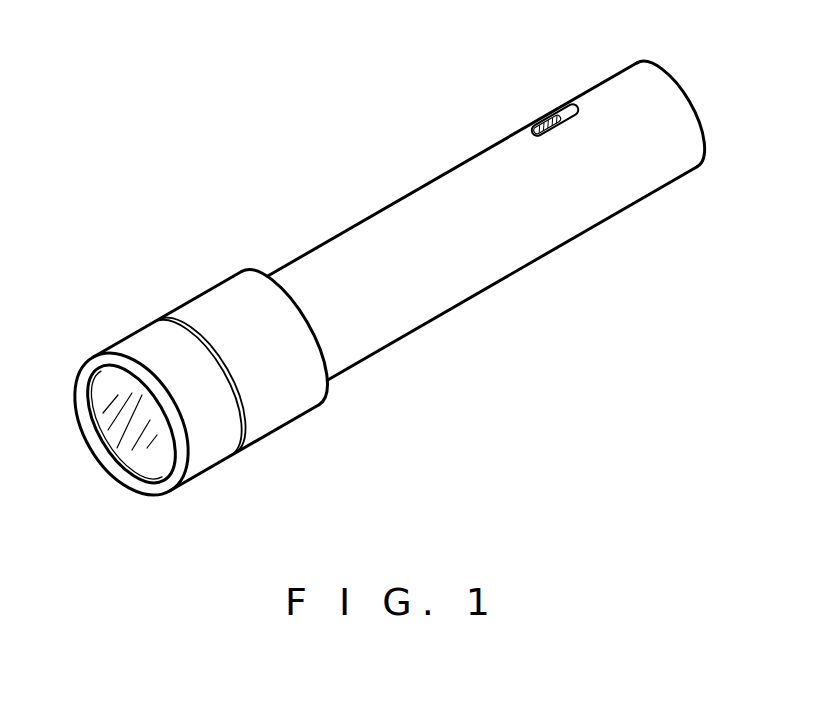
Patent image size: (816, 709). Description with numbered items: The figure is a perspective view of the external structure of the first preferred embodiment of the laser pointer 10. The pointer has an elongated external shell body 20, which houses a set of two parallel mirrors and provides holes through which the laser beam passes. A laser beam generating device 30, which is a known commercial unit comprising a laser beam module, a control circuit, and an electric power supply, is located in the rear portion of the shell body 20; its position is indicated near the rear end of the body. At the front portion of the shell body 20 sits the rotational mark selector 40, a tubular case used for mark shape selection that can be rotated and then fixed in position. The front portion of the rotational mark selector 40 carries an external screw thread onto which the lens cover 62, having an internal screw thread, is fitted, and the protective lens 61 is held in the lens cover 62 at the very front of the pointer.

The flashlight 10 is at (397, 162).
The external shell body 20 is at (462, 290).
The laser beam generating device 30 is at (597, 130).
The rotational mark selector 40 is at (288, 406).
The protective lens 61 is at (125, 461).
The lens cover 62 is at (200, 464).